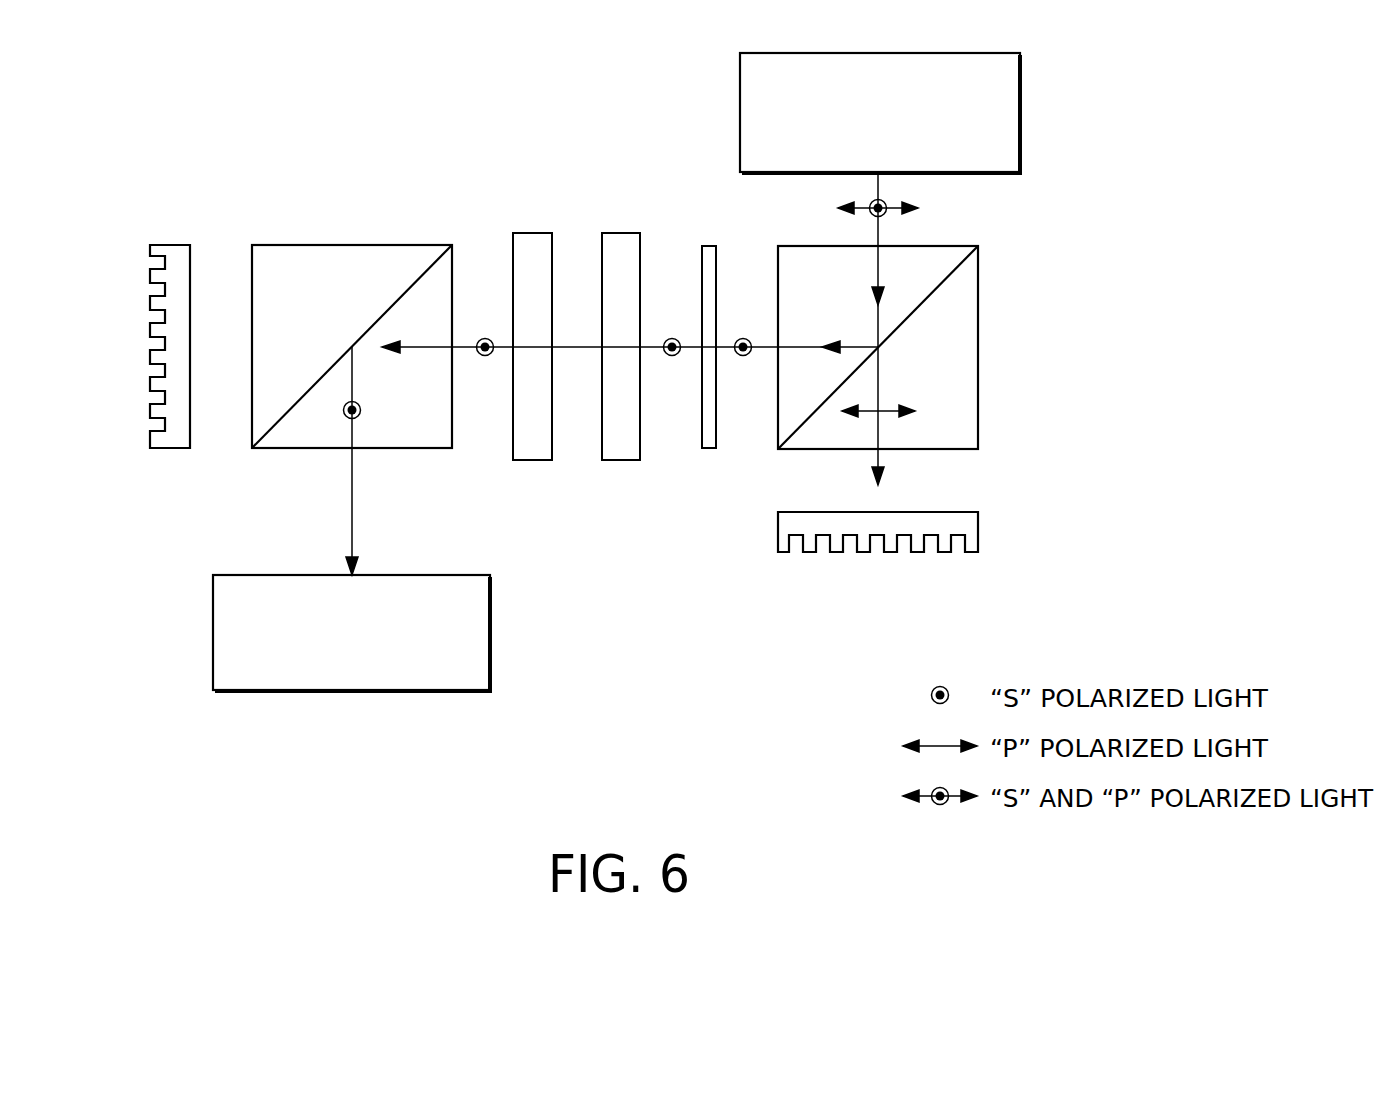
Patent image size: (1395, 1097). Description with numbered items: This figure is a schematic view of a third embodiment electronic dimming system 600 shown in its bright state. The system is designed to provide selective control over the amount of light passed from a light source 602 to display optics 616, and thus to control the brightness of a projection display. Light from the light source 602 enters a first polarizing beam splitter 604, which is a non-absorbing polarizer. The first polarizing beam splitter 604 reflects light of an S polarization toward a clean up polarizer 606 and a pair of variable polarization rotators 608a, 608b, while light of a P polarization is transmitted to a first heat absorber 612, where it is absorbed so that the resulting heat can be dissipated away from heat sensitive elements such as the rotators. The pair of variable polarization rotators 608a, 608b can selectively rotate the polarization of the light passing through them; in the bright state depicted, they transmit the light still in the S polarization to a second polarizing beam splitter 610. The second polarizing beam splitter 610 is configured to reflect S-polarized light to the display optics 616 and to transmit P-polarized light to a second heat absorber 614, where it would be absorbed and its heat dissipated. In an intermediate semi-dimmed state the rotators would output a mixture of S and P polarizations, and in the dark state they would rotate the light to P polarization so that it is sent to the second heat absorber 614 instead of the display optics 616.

The electronic dimming system 600 is at (148, 492).
The light source 602 is at (905, 53).
The first polarizing beam splitter 604 is at (980, 333).
The clean up polarizer 606 is at (710, 246).
The variable polarization rotator 608a is at (620, 232).
The variable polarization rotator 608b is at (538, 232).
The second polarizing beam splitter 610 is at (355, 245).
The first heat absorber 612 is at (980, 532).
The second heat absorber 614 is at (170, 245).
The display optics 616 is at (497, 645).